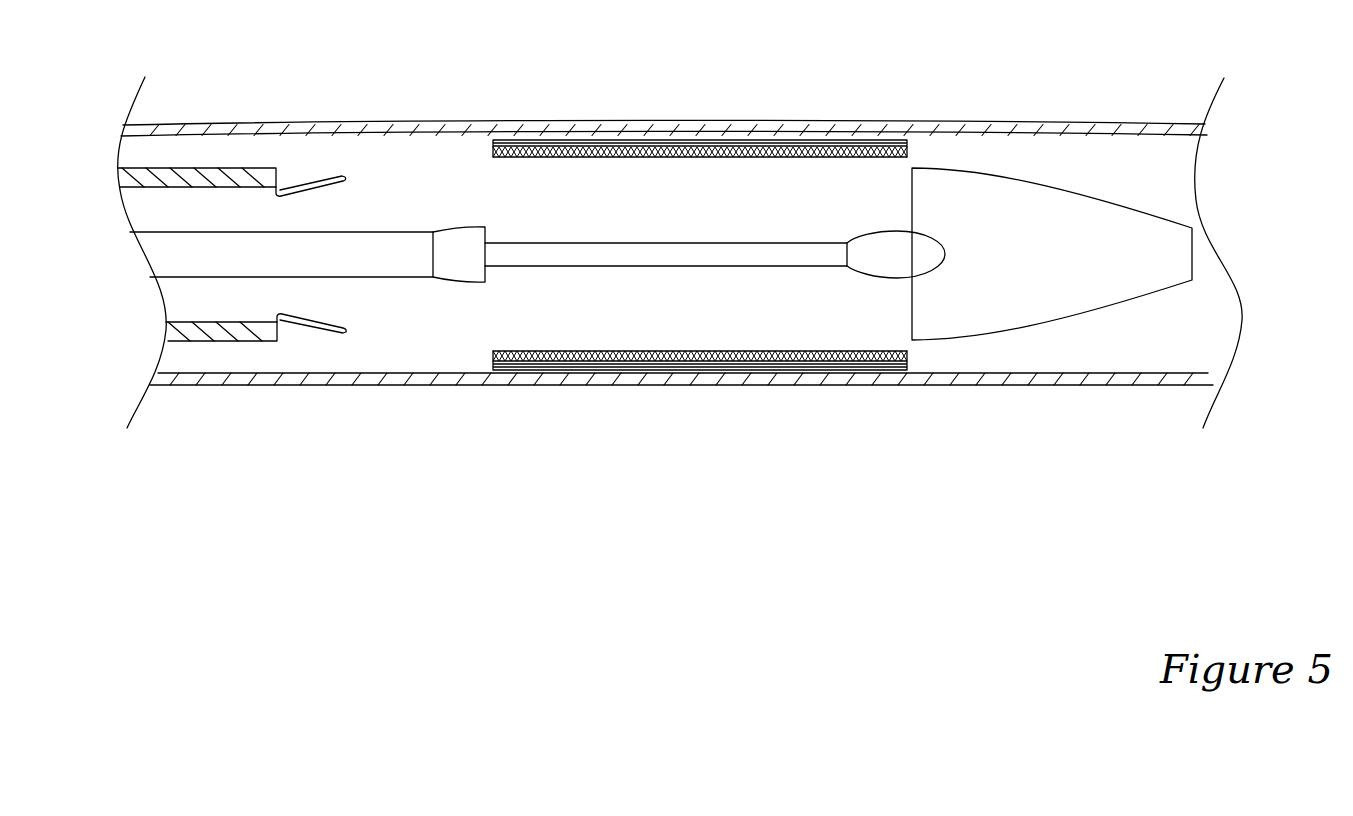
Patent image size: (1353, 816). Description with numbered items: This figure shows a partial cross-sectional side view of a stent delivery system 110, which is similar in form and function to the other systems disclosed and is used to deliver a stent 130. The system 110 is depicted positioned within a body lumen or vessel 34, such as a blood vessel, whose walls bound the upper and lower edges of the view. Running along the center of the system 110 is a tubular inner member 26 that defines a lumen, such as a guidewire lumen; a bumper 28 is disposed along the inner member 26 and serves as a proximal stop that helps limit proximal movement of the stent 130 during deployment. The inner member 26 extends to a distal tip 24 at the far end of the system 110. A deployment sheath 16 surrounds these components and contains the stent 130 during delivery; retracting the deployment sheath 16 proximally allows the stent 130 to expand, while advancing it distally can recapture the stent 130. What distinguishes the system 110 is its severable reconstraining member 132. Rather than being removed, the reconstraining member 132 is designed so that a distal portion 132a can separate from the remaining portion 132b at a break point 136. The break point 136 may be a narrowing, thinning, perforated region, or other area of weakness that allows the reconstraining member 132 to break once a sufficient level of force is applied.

The system 110 is at (220, 116).
The body lumen or vessel 34 is at (1116, 124).
The deployment sheath 16 is at (266, 172).
The severable reconstraining member 132 is at (328, 162).
The distal portion of reconstraining member 132a is at (848, 369).
The remaining portion of reconstraining member 132b is at (340, 369).
The break point 136 is at (346, 331).
The bumper 28 is at (472, 228).
The inner member 26 is at (585, 244).
The distal tip 24 is at (1092, 214).
The stent 130 is at (700, 158).